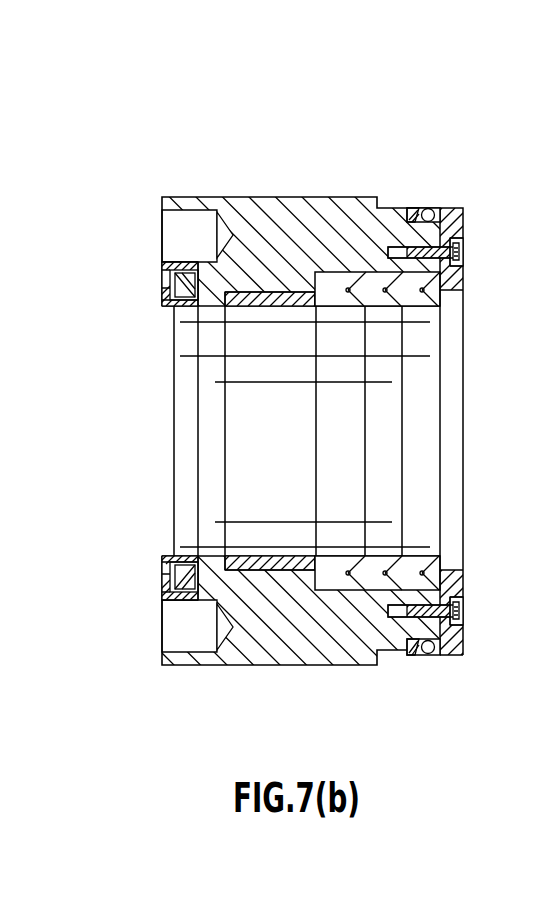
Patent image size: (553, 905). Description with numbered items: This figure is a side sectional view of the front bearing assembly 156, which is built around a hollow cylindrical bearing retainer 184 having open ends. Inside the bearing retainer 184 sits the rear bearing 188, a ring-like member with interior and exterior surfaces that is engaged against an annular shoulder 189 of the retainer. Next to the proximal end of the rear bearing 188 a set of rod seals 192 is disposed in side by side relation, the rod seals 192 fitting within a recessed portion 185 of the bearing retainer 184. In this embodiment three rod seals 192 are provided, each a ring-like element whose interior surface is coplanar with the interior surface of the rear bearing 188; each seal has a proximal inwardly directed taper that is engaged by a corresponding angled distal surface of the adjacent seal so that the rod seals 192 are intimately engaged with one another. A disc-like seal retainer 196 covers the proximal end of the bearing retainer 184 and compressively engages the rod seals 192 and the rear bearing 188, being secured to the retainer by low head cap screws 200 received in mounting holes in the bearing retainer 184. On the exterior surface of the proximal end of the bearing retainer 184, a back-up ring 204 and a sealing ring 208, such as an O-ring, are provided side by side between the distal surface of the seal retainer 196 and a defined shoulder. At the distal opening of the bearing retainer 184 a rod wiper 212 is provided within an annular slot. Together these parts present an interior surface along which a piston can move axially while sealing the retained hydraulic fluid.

The front bearing assembly 156 is at (194, 82).
The bearing retainer 184 is at (190, 197).
The recessed portion 185 is at (457, 592).
The rear bearing 188 is at (265, 298).
The annular shoulder 189 is at (228, 562).
The rod seals 192 is at (422, 290).
The seal retainer 196 is at (465, 228).
The low head cap screws 200 is at (463, 247).
The back-up ring 204 is at (410, 208).
The sealing ring 208 is at (433, 208).
The rod wiper 212 is at (162, 302).